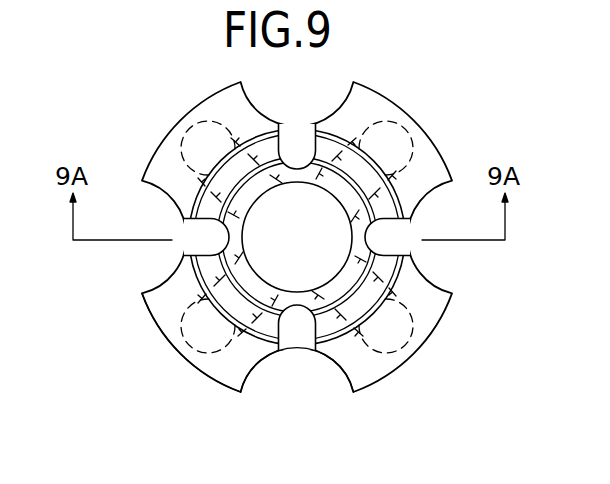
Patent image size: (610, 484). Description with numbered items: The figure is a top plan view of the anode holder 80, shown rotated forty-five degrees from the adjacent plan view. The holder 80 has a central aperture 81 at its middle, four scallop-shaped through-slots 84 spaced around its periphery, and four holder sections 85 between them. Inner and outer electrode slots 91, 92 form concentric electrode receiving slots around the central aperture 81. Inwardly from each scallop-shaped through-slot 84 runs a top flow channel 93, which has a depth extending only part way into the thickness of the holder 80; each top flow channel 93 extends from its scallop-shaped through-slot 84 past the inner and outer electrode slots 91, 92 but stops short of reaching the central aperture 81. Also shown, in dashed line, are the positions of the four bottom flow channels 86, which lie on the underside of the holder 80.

The anode holder 80 is at (150, 127).
The central aperture 81 is at (170, 340).
The scallop-shaped through-slot 84 is at (173, 254).
The holder section 85 is at (383, 117).
The bottom flow channel 86 is at (423, 338).
The inner electrode slot 91 is at (414, 266).
The outer electrode slot 92 is at (222, 383).
The top flow channel 93 is at (294, 143).